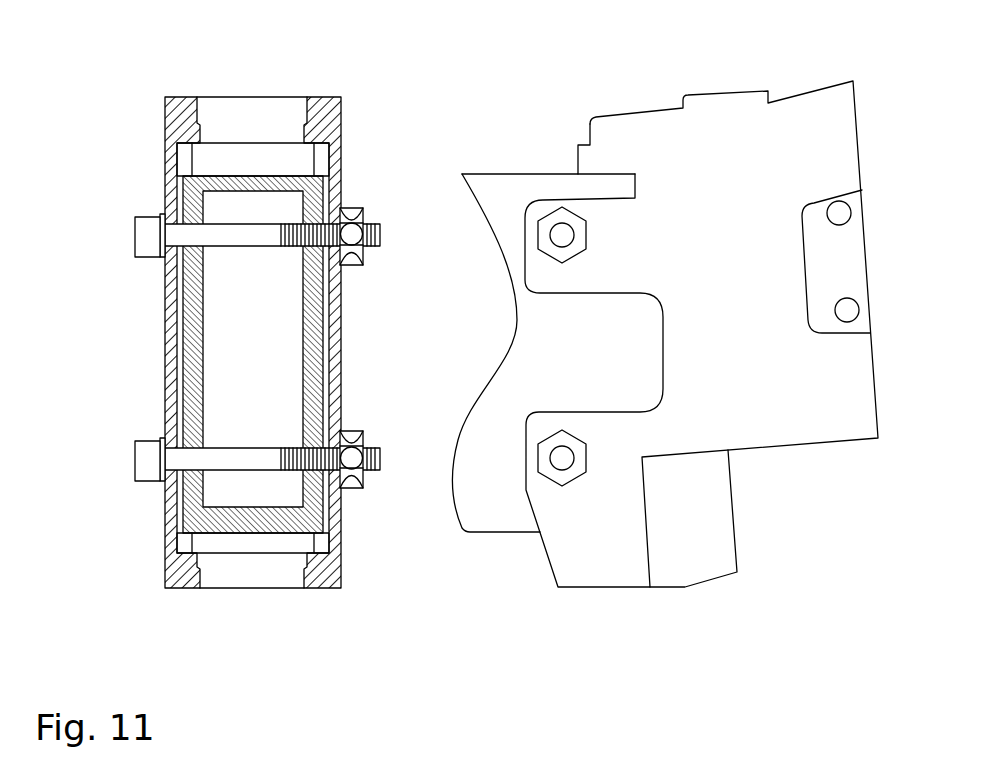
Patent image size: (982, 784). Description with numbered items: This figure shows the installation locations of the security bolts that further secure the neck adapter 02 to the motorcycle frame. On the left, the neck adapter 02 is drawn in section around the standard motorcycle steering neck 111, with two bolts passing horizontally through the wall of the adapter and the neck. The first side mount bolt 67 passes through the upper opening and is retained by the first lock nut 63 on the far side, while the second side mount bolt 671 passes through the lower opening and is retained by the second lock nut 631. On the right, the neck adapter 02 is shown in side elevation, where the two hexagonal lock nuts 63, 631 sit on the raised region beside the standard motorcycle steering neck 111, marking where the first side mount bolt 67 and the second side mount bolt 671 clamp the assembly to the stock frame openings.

The neck adapter 02 is at (187, 588).
The standard motorcycle steering neck 111 is at (167, 537).
The lock nut 63 is at (538, 206).
The second lock nut 631 is at (537, 472).
The side mount bolt 67 is at (135, 220).
The second side mount bolt 671 is at (137, 480).